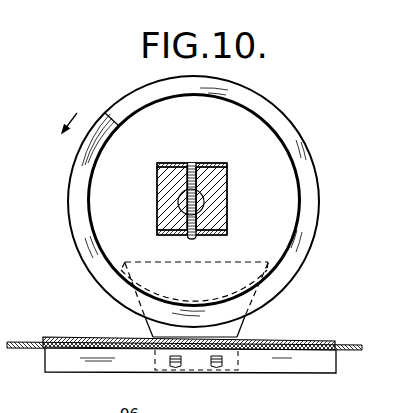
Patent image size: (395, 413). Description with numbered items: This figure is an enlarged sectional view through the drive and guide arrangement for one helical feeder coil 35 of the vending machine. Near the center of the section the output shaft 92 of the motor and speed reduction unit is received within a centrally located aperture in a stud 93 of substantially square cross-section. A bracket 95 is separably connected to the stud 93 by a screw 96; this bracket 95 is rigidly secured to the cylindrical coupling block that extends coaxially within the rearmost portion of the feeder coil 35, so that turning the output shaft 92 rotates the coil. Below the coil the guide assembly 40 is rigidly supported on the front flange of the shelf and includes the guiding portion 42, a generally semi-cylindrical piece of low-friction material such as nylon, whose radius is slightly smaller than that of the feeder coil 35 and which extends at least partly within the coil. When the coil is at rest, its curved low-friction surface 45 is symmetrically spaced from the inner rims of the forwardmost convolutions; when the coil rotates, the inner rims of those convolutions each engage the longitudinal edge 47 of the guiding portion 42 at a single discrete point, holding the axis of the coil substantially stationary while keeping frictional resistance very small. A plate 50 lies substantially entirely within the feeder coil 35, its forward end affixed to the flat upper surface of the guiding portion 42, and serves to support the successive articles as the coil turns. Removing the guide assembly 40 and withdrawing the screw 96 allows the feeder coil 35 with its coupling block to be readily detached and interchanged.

The helical feeder coil 35 is at (290, 135).
The guide assembly 40 is at (249, 327).
The guiding portion 42 is at (150, 336).
The curved low-friction surface 45 is at (131, 291).
The longitudinal edge 47 is at (272, 265).
The plate 50 is at (249, 263).
The output shaft 92 is at (180, 200).
The stud 93 is at (230, 200).
The bracket 95 is at (162, 163).
The screw 96 is at (196, 163).